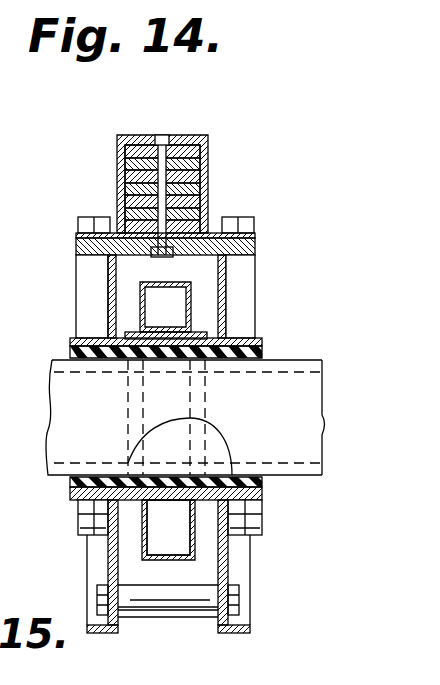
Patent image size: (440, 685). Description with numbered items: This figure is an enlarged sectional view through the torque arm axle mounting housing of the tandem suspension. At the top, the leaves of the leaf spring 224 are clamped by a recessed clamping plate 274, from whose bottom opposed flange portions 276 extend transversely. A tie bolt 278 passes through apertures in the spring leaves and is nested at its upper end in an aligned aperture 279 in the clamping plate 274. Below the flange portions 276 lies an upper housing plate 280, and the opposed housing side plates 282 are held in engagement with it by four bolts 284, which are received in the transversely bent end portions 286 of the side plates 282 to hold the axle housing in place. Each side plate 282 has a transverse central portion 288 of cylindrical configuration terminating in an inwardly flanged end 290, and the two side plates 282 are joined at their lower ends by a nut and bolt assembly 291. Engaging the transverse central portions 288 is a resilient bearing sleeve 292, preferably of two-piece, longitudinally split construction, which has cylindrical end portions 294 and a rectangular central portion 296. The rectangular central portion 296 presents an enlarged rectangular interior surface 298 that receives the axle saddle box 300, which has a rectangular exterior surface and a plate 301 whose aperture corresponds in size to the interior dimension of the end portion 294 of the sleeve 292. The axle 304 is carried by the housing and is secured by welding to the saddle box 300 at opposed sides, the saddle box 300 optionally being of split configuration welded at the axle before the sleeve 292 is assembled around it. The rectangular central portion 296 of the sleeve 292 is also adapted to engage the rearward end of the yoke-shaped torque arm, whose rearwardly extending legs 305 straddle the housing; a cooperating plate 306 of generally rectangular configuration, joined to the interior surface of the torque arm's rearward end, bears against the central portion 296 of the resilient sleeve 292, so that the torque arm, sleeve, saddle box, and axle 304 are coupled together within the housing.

The leaf spring assembly 224 is at (212, 152).
The recessed clamping plate 274 is at (205, 176).
The flange portions 276 is at (78, 237).
The tie bolt 278 is at (172, 136).
The aligned aperture 279 is at (157, 134).
The upper housing plate 280 is at (257, 248).
The housing side plates 282 is at (77, 286).
The bolts 284 is at (98, 216).
The transversely bent end portions 286 is at (265, 505).
The transverse central portions 288 is at (263, 342).
The inwardly flanged ends 290 is at (70, 342).
The nut and bolt assembly 291 is at (160, 618).
The resilient bearing sleeve 292 is at (93, 362).
The cylindrical end portions 294 is at (98, 475).
The rectangular central portion 296 is at (118, 500).
The enlarged rectangular interior surface 298 is at (210, 470).
The axle saddle box 300 is at (162, 361).
The plate 301 is at (180, 430).
The axle 304 is at (315, 392).
The legs 305 is at (160, 282).
The cooperating plate 306 is at (174, 332).